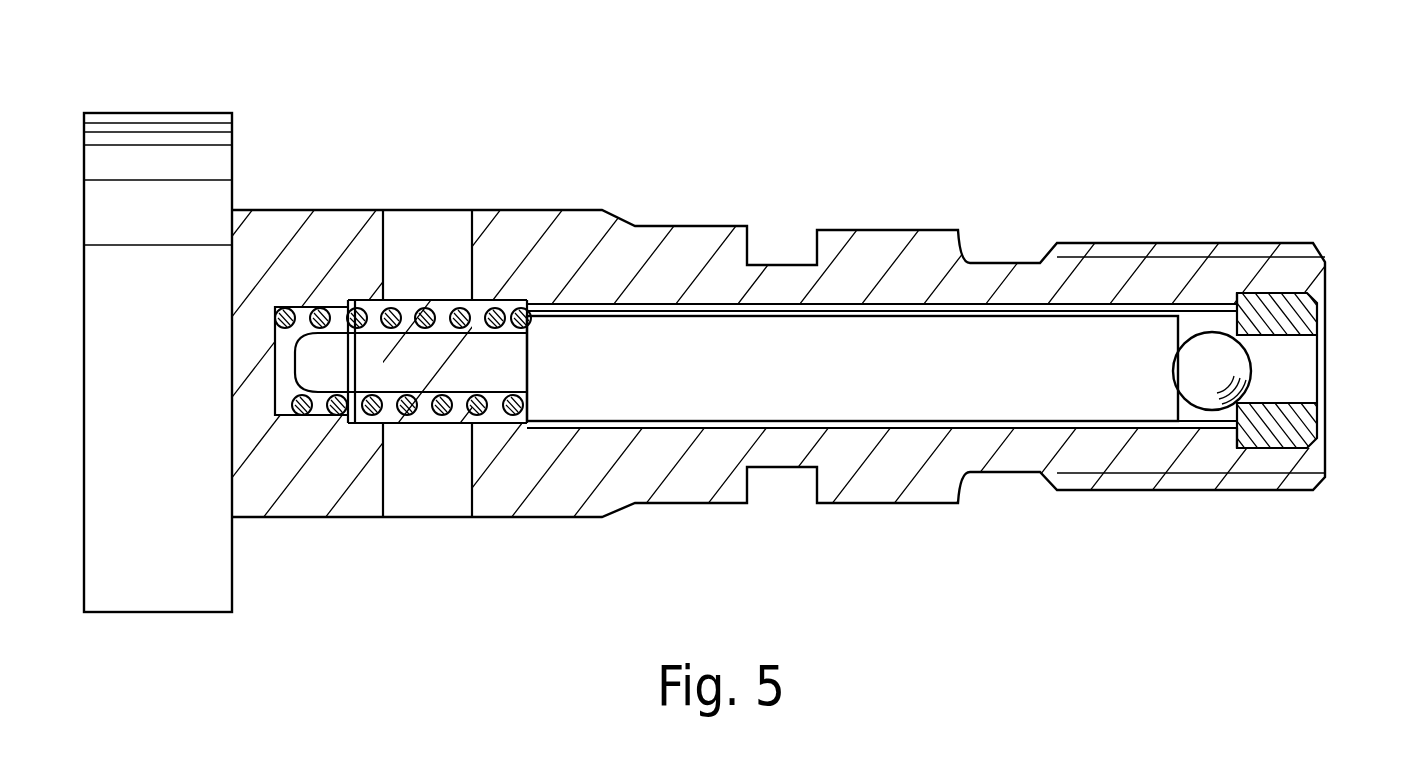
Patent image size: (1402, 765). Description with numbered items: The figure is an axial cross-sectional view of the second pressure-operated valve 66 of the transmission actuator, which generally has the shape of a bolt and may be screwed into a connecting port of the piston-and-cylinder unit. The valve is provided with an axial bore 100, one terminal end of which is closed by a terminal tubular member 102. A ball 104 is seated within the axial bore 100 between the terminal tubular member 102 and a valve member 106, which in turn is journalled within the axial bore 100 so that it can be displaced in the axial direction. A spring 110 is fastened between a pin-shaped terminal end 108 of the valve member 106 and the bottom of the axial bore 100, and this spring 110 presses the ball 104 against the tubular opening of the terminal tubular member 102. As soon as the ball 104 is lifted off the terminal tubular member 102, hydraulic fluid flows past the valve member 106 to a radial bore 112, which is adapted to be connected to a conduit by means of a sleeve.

The second pressure-operated valve 66 is at (946, 160).
The axial bore 100 is at (1212, 303).
The terminal tubular member 102 is at (1330, 300).
The ball 104 is at (1203, 393).
The valve member 106 is at (1013, 348).
The pin-shaped terminal end 108 is at (490, 358).
The spring 110 is at (437, 318).
The radial bore 112 is at (425, 483).